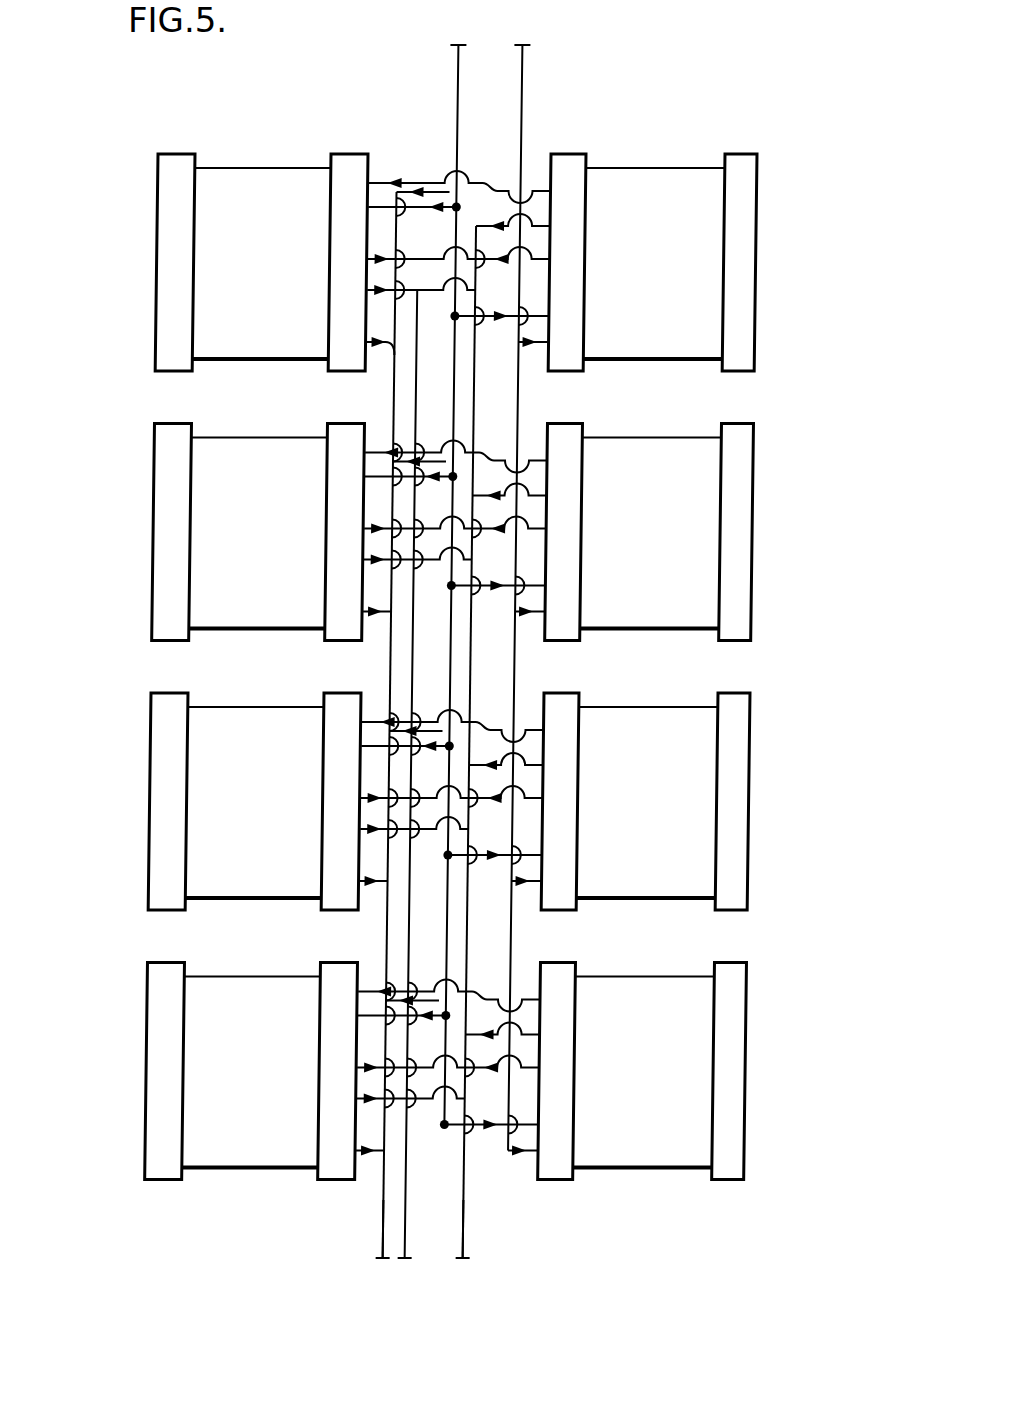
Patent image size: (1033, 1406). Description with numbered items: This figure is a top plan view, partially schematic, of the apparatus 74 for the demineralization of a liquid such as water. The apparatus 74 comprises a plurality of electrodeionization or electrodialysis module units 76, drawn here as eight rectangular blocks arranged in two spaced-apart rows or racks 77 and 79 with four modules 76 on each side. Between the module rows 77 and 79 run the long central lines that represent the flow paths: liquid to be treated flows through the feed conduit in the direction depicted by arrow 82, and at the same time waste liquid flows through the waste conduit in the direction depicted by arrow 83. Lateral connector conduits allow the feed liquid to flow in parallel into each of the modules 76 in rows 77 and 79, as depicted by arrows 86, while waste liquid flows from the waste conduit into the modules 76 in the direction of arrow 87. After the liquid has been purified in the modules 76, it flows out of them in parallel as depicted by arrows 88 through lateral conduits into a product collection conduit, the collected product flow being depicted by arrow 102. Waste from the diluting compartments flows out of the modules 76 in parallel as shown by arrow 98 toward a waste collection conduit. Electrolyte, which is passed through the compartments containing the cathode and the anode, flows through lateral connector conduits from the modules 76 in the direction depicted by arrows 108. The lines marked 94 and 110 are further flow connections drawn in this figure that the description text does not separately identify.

The apparatus 74 is at (475, 675).
The module units 76 is at (444, 659).
The row 77 is at (150, 253).
The row 79 is at (780, 182).
The arrow 82 is at (452, 567).
The arrow 83 is at (540, 580).
The arrows 86 is at (503, 1210).
The arrow 87 is at (413, 181).
The arrows 88 is at (507, 627).
The return line 94 is at (421, 1260).
The arrow 98 is at (512, 236).
The arrow 102 is at (481, 1258).
The arrows 108 is at (398, 1258).
The connection passage 110 is at (497, 181).